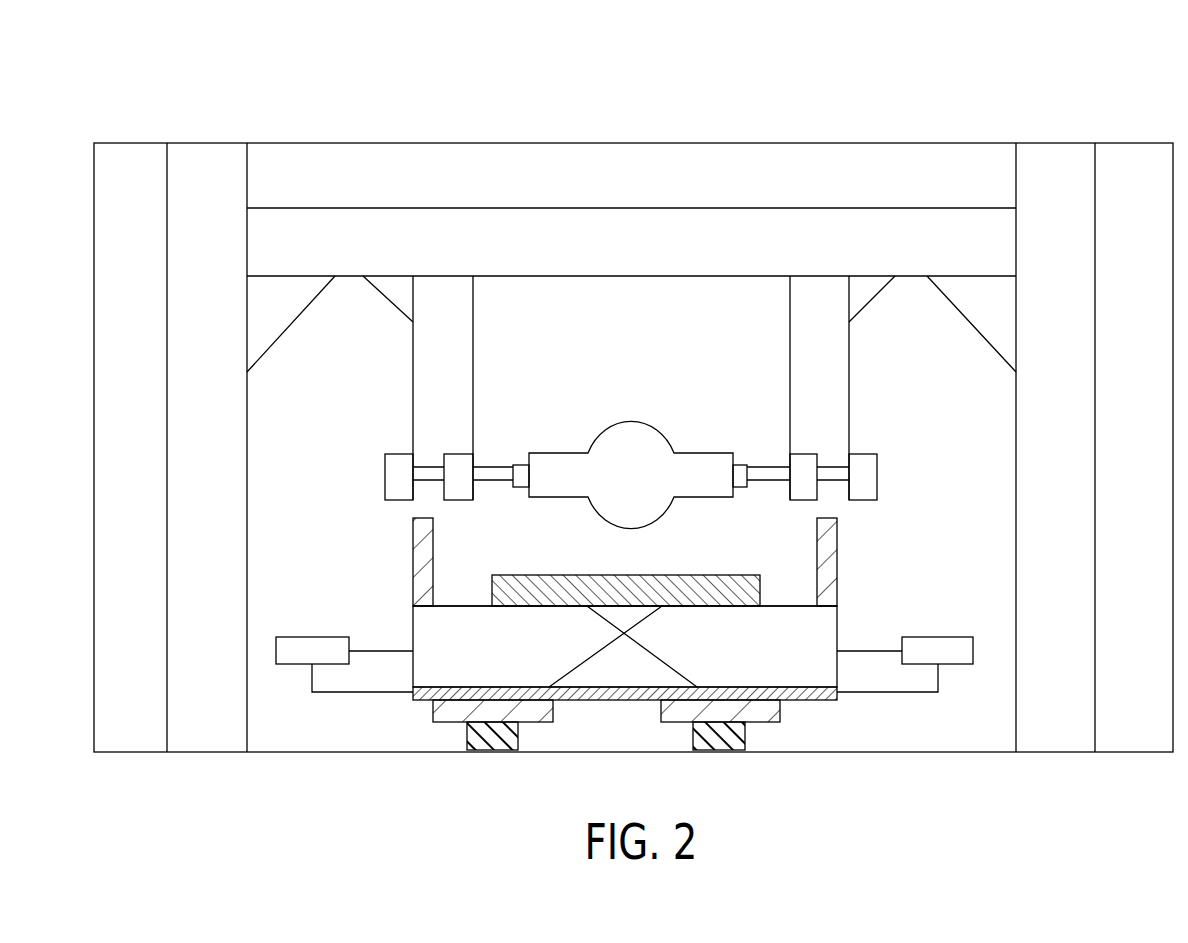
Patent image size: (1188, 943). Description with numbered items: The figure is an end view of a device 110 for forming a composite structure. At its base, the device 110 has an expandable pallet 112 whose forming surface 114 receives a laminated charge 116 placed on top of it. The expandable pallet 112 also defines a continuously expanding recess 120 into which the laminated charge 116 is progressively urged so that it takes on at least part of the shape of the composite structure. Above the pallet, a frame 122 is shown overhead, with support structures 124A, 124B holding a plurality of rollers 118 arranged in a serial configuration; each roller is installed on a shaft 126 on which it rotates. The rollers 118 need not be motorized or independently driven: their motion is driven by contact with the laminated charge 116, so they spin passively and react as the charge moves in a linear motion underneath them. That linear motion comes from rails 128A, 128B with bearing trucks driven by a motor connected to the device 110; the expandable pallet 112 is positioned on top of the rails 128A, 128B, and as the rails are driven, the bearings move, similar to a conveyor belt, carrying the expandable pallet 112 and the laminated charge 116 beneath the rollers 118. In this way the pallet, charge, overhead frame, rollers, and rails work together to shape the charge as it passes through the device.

The device 110 is at (458, 95).
The expandable pallet 112 is at (448, 663).
The forming surface 114 is at (484, 602).
The laminated charge 116 is at (553, 569).
The plurality of rollers 118 is at (622, 420).
The continuously expanding recess 120 is at (625, 620).
The frame 122 is at (302, 142).
The support structure 124A is at (440, 393).
The support structure 124B is at (820, 385).
The shaft 126 is at (768, 466).
The rail 128A is at (447, 722).
The rail 128B is at (762, 730).